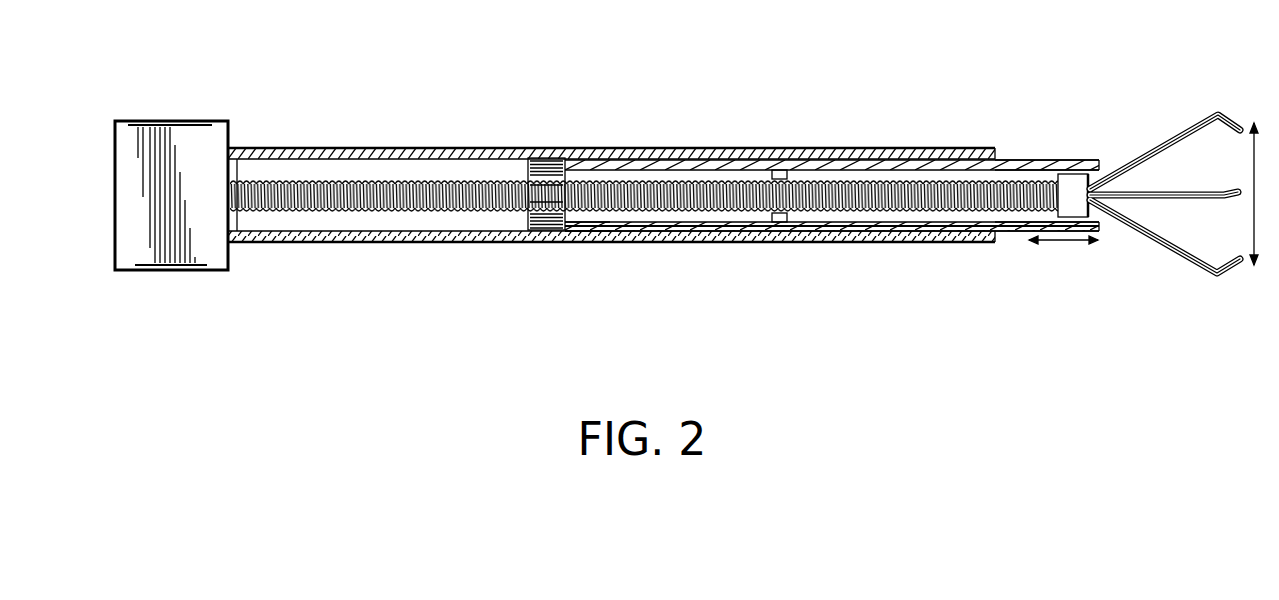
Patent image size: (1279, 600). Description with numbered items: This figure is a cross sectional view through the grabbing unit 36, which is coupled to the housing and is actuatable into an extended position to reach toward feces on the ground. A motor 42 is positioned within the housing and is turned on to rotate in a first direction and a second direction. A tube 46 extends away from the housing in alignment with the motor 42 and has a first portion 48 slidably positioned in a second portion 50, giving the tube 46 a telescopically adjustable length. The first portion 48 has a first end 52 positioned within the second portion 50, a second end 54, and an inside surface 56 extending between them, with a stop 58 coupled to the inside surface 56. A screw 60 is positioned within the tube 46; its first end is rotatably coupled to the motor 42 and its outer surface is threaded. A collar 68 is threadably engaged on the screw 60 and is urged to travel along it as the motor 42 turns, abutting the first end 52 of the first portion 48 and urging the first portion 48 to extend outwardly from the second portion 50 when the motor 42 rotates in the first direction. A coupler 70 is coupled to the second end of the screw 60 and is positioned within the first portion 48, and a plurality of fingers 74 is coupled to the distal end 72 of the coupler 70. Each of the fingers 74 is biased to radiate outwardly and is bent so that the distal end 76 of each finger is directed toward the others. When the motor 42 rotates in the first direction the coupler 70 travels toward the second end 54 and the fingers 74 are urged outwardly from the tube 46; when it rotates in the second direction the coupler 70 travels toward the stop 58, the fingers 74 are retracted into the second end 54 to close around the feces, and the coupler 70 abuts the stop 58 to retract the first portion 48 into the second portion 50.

The grabbing unit 36 is at (647, 75).
The motor 42 is at (178, 121).
The tube 46 is at (893, 148).
The first portion 48 is at (1010, 241).
The second portion 50 is at (727, 150).
The first end 52 is at (565, 231).
The second end 54 is at (1117, 173).
The inside surface 56 is at (809, 158).
The stop 58 is at (790, 220).
The screw 60 is at (450, 178).
The collar 68 is at (555, 158).
The coupler 70 is at (1057, 170).
The distal end 72 is at (1088, 165).
The fingers 74 is at (1177, 138).
The distal end 76 is at (1240, 130).